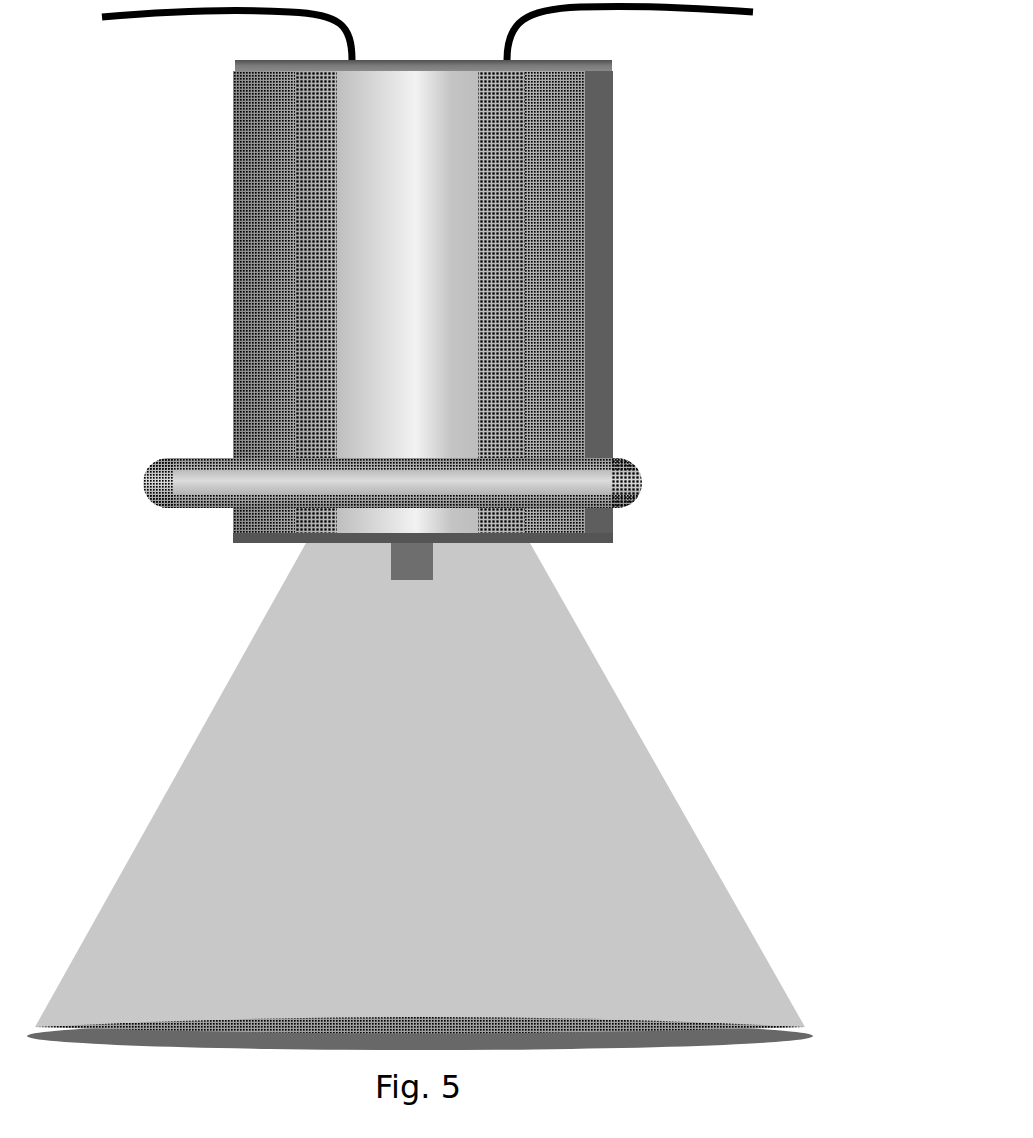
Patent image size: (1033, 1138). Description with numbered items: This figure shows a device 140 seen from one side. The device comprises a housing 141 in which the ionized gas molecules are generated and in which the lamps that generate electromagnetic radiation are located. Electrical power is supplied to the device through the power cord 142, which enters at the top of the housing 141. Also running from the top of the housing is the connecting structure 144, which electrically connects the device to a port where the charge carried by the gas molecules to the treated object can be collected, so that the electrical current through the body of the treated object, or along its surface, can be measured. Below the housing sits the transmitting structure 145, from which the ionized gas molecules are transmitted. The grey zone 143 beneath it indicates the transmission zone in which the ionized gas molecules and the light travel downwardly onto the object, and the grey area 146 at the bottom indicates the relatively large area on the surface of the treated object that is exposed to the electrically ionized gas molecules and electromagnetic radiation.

The device 140 is at (420, 543).
The housing 141 is at (398, 279).
The power cord 142 is at (185, 18).
The grey zone 143 is at (398, 813).
The connecting structure 144 is at (708, 12).
The transmitting structure 145 is at (412, 563).
The grey area 146 is at (563, 1032).